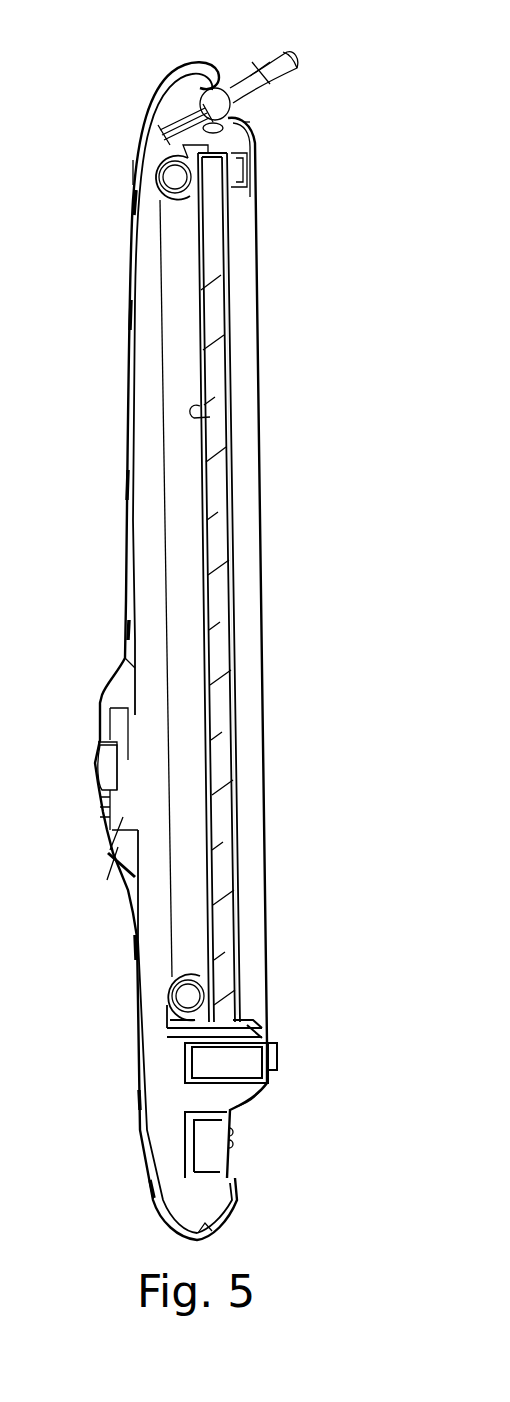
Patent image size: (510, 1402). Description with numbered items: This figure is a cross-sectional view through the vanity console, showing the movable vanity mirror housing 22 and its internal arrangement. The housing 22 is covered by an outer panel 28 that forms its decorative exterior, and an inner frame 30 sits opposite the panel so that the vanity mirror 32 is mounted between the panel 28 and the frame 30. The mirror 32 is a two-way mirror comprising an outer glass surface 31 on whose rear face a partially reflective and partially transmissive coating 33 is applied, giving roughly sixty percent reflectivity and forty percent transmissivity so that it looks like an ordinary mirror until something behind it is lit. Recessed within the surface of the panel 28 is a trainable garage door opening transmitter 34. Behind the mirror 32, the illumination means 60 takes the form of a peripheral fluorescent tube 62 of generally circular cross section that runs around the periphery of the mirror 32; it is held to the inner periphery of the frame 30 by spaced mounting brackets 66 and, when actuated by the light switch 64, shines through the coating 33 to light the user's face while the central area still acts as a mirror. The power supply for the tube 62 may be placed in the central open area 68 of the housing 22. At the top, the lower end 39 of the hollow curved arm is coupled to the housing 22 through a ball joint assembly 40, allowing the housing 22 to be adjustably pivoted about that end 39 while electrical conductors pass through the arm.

The vanity mirror housing 22 is at (83, 73).
The outer panel 28 is at (135, 172).
The inner frame 30 is at (247, 155).
The outer glass surface 31 is at (213, 363).
The vanity mirror 32 is at (216, 304).
The partially reflective and partially transmissive coating 33 is at (222, 414).
The trainable garage door opening transmitter 34 is at (114, 813).
The lower end of curved arm 39 is at (262, 76).
The ball joint assembly 40 is at (222, 98).
The illumination means 60 is at (166, 182).
The peripheral fluorescent tube 62 is at (193, 183).
The light switch 64 is at (278, 1058).
The mounting brackets 66 is at (165, 160).
The central open area 68 is at (132, 600).